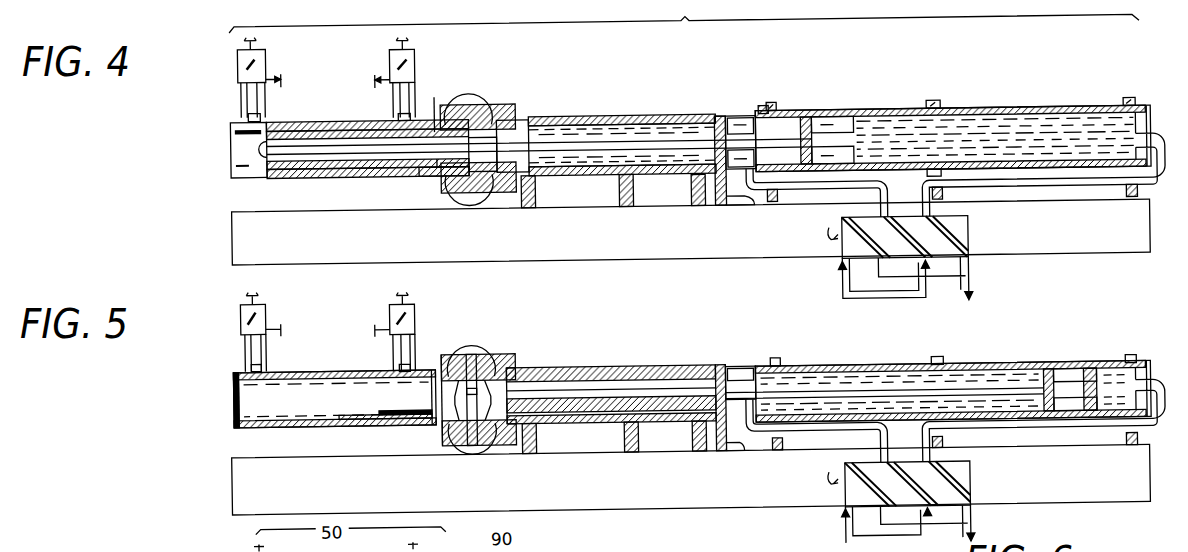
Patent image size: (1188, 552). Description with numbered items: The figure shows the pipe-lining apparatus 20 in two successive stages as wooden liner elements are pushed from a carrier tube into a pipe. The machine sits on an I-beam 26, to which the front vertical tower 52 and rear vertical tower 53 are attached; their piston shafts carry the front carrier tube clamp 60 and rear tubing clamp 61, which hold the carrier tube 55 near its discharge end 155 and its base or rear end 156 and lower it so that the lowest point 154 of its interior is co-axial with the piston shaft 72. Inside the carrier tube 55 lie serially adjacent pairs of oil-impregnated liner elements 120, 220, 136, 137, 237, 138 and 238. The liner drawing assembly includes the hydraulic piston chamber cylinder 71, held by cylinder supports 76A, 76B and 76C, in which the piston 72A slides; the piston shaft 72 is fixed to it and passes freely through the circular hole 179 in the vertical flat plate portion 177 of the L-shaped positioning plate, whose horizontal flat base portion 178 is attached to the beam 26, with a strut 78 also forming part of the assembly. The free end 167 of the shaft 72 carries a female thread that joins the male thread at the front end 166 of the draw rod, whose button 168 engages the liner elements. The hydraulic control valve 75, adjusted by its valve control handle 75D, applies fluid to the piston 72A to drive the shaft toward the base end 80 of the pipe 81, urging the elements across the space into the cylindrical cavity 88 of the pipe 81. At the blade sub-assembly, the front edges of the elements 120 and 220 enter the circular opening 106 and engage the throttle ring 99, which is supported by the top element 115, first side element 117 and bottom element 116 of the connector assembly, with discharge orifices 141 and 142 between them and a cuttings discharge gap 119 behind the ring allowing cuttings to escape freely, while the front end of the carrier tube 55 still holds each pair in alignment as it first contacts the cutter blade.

In FIG. 4, the apparatus 20 is at (684, 16).
In FIG. 4, the I-beam 26 is at (290, 251).
In FIG. 5, the I-beam 26 is at (316, 499).
In FIG. 4, the rear tubing clamp 61 is at (248, 118).
In FIG. 5, the rear tubing clamp 61 is at (252, 369).
In FIG. 4, the liner element 238 is at (293, 131).
In FIG. 4, the liner element 237 is at (347, 134).
In FIG. 4, the button 168 is at (236, 152).
In FIG. 5, the button 168 is at (517, 392).
In FIG. 4, the liner element 138 is at (308, 165).
In FIG. 4, the liner element 137 is at (357, 162).
In FIG. 5, the liner element 137 is at (577, 412).
In FIG. 4, the liner element 220 is at (446, 103).
In FIG. 4, the throttle ring 99 is at (452, 110).
In FIG. 5, the throttle ring 99 is at (457, 447).
In FIG. 4, the discharge orifice 141 is at (490, 104).
In FIG. 5, the discharge orifice 141 is at (470, 362).
In FIG. 4, the piston shaft 72 is at (560, 152).
In FIG. 4, the cylindrical cavity 88 is at (592, 138).
In FIG. 4, the pipe 81 is at (657, 124).
In FIG. 4, the base end 80 is at (717, 125).
In FIG. 4, the vertical flat plate portion 177 is at (719, 134).
In FIG. 4, the circular hole 179 is at (727, 141).
In FIG. 4, the strut 78 is at (755, 126).
In FIG. 4, the piston 72A is at (820, 126).
In FIG. 5, the piston 72A is at (1042, 389).
In FIG. 4, the horizontal flat base portion 178 is at (728, 208).
In FIG. 5, the horizontal flat base portion 178 is at (728, 455).
In FIG. 4, the cylinder support 76A is at (774, 211).
In FIG. 4, the cylinder support 76B is at (945, 200).
In FIG. 4, the cylinder support 76C is at (1128, 211).
In FIG. 4, the discharge end 155 is at (428, 181).
In FIG. 5, the discharge end 155 is at (432, 410).
In FIG. 4, the liner element 120 is at (438, 172).
In FIG. 5, the liner element 120 is at (677, 415).
In FIG. 4, the cuttings discharge gap 119 is at (464, 184).
In FIG. 5, the rear vertical tower 53 is at (273, 327).
In FIG. 5, the front vertical tower 52 is at (392, 326).
In FIG. 5, the carrier tube 55 is at (336, 374).
In FIG. 5, the front carrier tube clamp 60 is at (406, 363).
In FIG. 5, the base or rear end 156 is at (237, 405).
In FIG. 5, the lowest point of interior surface 154 is at (358, 420).
In FIG. 5, the top element 115 is at (487, 359).
In FIG. 5, the first side element 117 is at (503, 385).
In FIG. 5, the liner element 136 is at (648, 414).
In FIG. 5, the front end 166 is at (708, 399).
In FIG. 5, the free end 167 is at (745, 397).
In FIG. 5, the circular opening 106 is at (445, 438).
In FIG. 5, the bottom element 116 is at (475, 446).
In FIG. 5, the discharge orifice 142 is at (493, 441).
In FIG. 5, the hydraulic piston chamber cylinder 71 is at (1078, 377).
In FIG. 5, the valve control handle 75D is at (828, 498).
In FIG. 5, the hydraulic control valve 75 is at (971, 492).